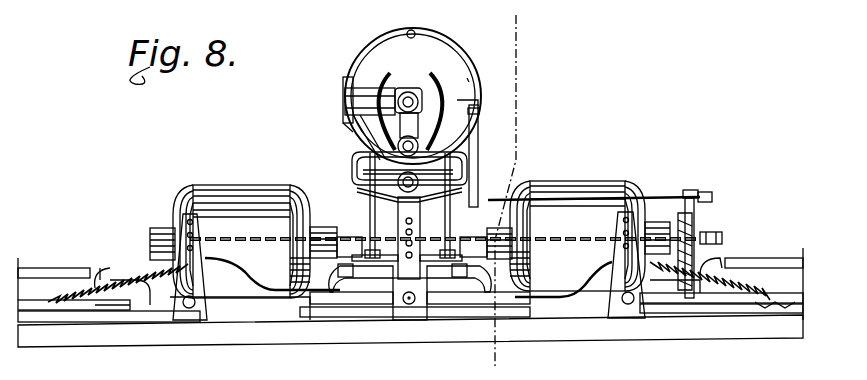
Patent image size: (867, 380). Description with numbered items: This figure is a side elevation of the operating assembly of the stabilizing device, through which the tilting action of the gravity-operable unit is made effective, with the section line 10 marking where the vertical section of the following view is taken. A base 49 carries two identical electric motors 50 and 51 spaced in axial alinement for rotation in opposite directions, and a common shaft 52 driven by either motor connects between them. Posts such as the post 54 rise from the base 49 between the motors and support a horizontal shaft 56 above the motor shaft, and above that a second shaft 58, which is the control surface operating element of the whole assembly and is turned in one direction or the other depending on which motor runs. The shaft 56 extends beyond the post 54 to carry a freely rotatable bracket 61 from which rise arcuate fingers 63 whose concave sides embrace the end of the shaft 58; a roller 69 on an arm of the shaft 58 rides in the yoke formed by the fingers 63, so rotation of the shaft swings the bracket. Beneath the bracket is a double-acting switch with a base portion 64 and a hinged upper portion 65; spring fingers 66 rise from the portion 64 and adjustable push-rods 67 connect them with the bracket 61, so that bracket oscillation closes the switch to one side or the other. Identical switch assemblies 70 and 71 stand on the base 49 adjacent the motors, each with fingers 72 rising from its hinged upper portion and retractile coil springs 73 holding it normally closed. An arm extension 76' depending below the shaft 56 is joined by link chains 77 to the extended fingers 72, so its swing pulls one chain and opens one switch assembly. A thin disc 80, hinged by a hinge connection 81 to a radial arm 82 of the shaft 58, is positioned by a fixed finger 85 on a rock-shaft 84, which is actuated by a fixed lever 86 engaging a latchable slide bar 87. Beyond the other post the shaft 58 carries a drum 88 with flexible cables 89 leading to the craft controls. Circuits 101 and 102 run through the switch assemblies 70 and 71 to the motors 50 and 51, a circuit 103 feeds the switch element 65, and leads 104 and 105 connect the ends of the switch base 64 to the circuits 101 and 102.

The section line 10 is at (516, 190).
The base 49 is at (410, 331).
The electric motor 50 is at (232, 198).
The electric motor 51 is at (568, 192).
The common shaft 52 is at (348, 232).
The post 54 is at (462, 227).
The shaft 56 is at (409, 177).
The second shaft 58 is at (408, 97).
The bracket 61 is at (401, 164).
The arcuate fingers 63 is at (412, 104).
The switch base portion 64 is at (377, 306).
The movable upper switch portion 65 is at (399, 299).
The spring fingers 66 is at (407, 261).
The push-rods 67 is at (375, 210).
The roller 69 is at (400, 130).
The switch assembly 70 is at (155, 305).
The switch assembly 71 is at (690, 296).
The fingers 72 is at (262, 230).
The retractile coil springs 73 is at (752, 286).
The arm extension 76' is at (419, 238).
The link chains 77 is at (240, 250).
The disc 80 is at (410, 44).
The hinge connection 81 is at (343, 96).
The radial arm 82 is at (370, 124).
The rock-shaft 84 is at (660, 196).
The fixed finger 85 is at (478, 151).
The fixed lever 86 is at (684, 209).
The latchable slide bar 87 is at (711, 229).
The drum 88 is at (468, 80).
The flexible cables 89 is at (372, 44).
The circuit 101 is at (54, 276).
The circuit 102 is at (764, 279).
The circuit 103 is at (410, 278).
The leads 104 is at (262, 283).
The leads 105 is at (590, 284).